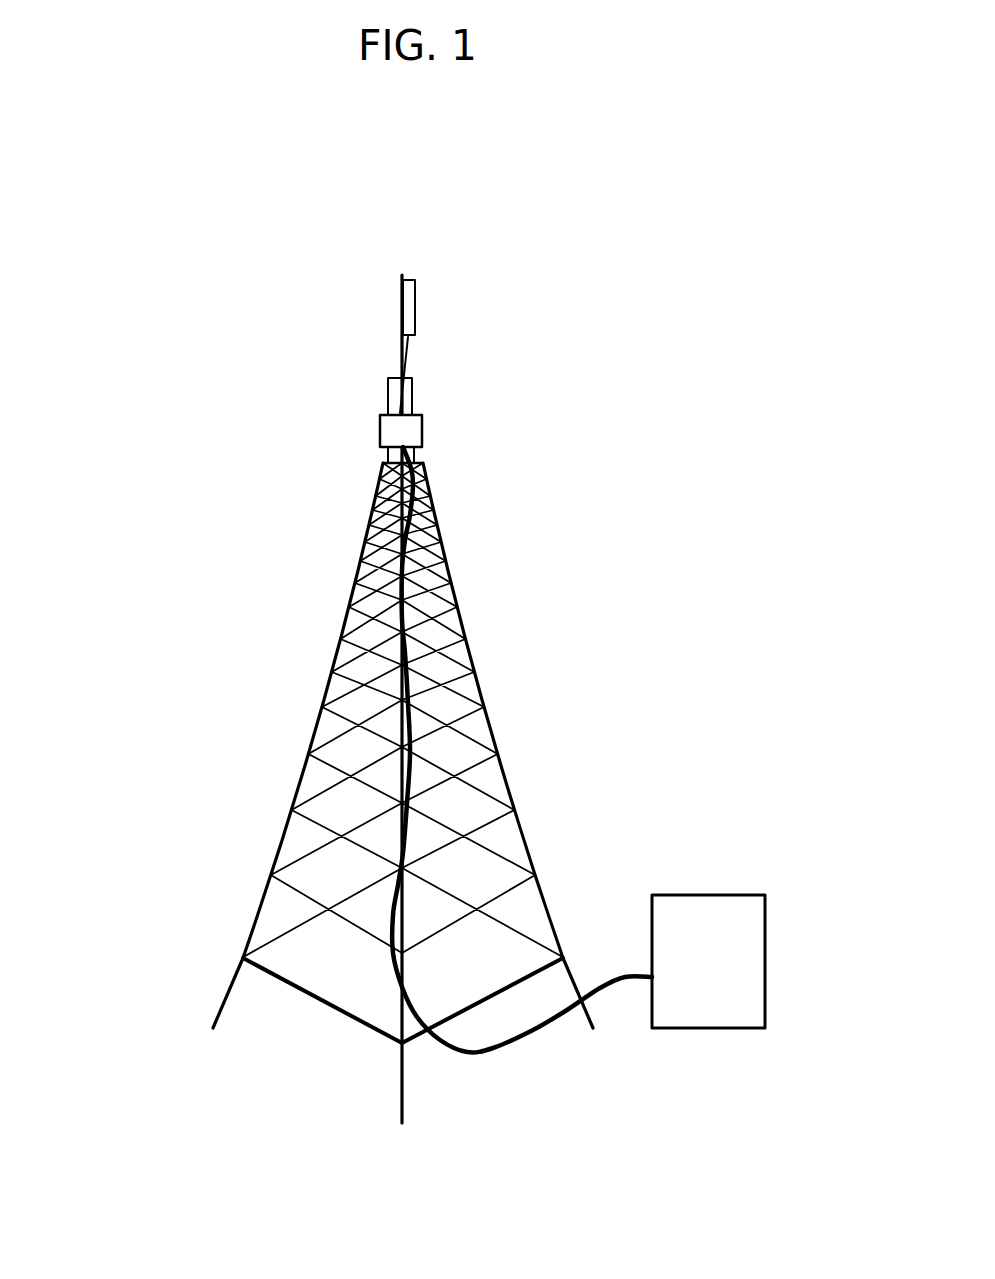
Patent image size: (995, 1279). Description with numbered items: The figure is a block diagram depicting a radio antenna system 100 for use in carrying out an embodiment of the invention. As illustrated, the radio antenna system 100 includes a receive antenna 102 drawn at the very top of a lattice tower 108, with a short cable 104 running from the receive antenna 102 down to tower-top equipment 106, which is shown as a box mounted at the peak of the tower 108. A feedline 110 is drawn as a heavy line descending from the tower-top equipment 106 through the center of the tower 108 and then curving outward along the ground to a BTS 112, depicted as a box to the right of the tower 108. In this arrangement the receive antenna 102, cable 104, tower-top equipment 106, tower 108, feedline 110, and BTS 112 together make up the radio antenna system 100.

The radio antenna system 100 is at (213, 347).
The receive antenna 102 is at (417, 307).
The cable 104 is at (412, 357).
The tower-top equipment 106 is at (422, 430).
The tower 108 is at (452, 590).
The feedline 110 is at (487, 1053).
The BTS 112 is at (765, 962).